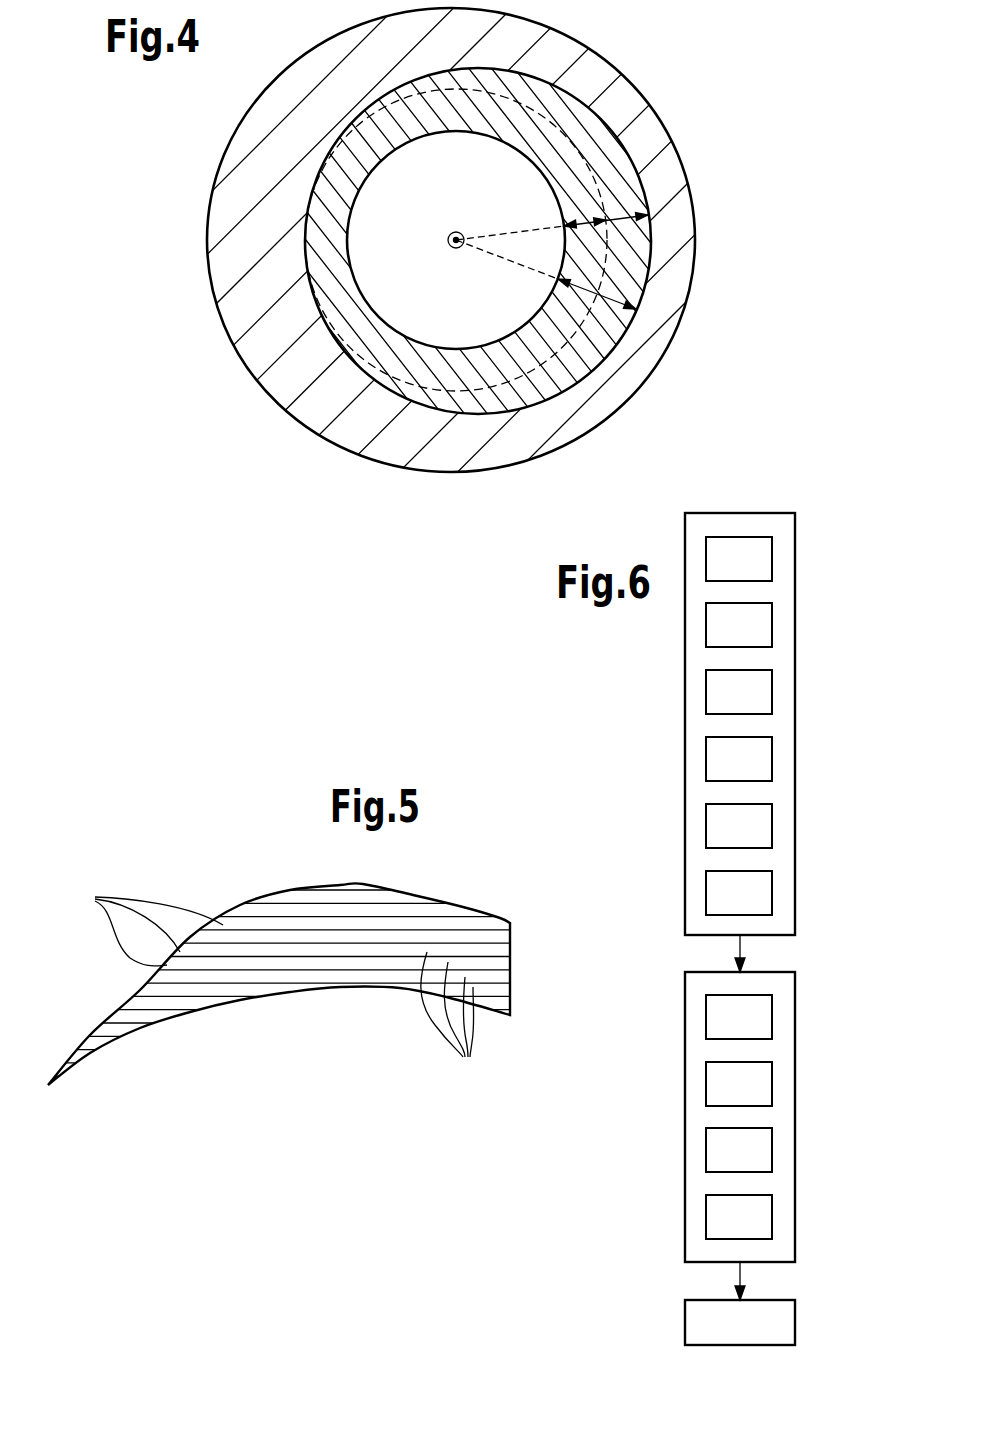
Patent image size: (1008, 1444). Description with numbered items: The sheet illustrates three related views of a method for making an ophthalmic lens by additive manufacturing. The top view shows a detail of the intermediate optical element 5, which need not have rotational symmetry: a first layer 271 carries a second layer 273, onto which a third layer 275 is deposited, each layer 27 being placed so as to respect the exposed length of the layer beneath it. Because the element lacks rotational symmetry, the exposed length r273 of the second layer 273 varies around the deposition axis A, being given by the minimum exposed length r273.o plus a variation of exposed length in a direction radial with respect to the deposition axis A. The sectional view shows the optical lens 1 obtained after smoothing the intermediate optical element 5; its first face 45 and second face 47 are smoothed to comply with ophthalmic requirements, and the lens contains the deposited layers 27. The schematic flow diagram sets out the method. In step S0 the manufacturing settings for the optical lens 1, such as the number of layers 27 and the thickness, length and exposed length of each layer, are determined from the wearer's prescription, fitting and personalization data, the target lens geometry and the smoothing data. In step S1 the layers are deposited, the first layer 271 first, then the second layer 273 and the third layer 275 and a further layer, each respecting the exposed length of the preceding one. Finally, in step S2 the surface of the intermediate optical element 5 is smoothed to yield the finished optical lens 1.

In FIG. 4, the intermediate optical element 5 is at (152, 388).
In FIG. 4, the first layer 271 is at (665, 164).
In FIG. 4, the second layer 273 is at (603, 147).
In FIG. 4, the third layer 275 is at (508, 166).
In FIG. 4, the deposition axis A is at (450, 255).
In FIG. 4, the exposed length of second layer r273 is at (612, 300).
In FIG. 4, the minimum exposed length for the second layer r273.o is at (648, 225).
In FIG. 5, the optical lens 1 is at (460, 866).
In FIG. 5, the layer 27 is at (271, 985).
In FIG. 5, the first face 45 is at (250, 902).
In FIG. 5, the second face 47 is at (250, 1000).
In FIG. 6, the step of determining manufacturing settings S0 is at (783, 590).
In FIG. 6, the step of depositing layers S1 is at (783, 1052).
In FIG. 6, the step of smoothing S2 is at (783, 1325).